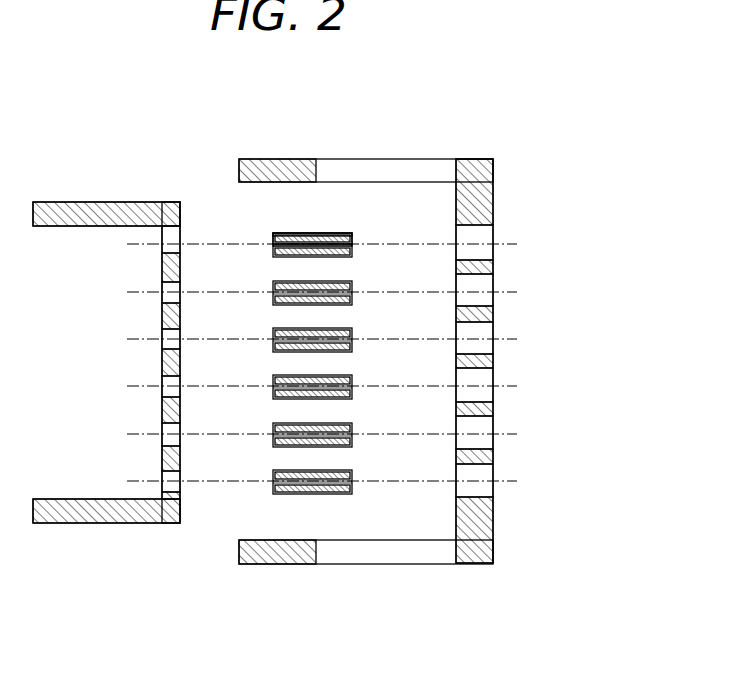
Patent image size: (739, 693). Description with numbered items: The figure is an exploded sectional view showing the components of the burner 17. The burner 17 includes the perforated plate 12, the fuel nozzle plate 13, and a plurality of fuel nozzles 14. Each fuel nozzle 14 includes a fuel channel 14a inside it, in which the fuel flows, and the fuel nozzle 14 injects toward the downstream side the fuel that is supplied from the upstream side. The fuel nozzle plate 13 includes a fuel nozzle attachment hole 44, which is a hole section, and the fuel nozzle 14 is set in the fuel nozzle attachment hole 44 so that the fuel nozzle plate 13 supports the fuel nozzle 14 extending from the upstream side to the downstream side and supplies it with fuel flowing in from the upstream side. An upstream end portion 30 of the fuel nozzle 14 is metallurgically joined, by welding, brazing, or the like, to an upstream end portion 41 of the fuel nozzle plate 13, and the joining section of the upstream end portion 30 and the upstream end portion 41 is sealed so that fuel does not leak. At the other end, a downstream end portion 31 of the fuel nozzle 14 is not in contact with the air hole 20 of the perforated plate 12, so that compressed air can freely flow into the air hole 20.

The burner 17 is at (514, 128).
The perforated plate 12 is at (487, 199).
The air hole 20 is at (487, 238).
The fuel nozzle 14 is at (303, 234).
The upstream end portion of the fuel nozzle 30 is at (273, 235).
The downstream end portion of the fuel nozzle 31 is at (353, 236).
The fuel channel 14a is at (352, 248).
The upstream end portion of the fuel nozzle plate 41 is at (163, 231).
The fuel nozzle plate 13 is at (173, 215).
The fuel nozzle attachment hole 44 is at (173, 239).